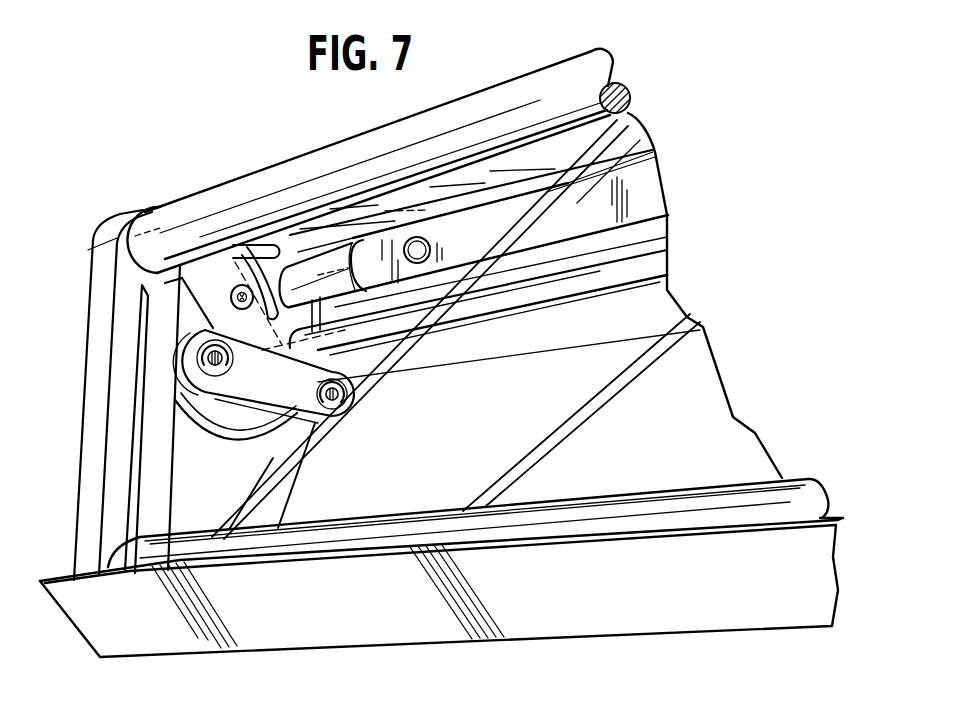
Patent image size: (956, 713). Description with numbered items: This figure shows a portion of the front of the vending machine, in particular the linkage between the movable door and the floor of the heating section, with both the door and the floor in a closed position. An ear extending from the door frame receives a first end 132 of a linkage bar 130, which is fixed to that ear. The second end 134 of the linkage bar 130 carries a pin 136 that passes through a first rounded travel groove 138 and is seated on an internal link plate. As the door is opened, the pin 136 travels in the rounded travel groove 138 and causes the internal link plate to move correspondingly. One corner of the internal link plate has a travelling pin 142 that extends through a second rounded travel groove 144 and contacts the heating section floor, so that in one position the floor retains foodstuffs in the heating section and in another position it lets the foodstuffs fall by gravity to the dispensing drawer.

The linkage bar 130 is at (300, 416).
The first end of linkage bar 132 is at (205, 416).
The second end of linkage bar 134 is at (343, 374).
The pin 136 is at (338, 406).
The first rounded travel groove 138 is at (250, 420).
The travelling pin 142 is at (284, 243).
The second rounded travel groove 144 is at (228, 303).